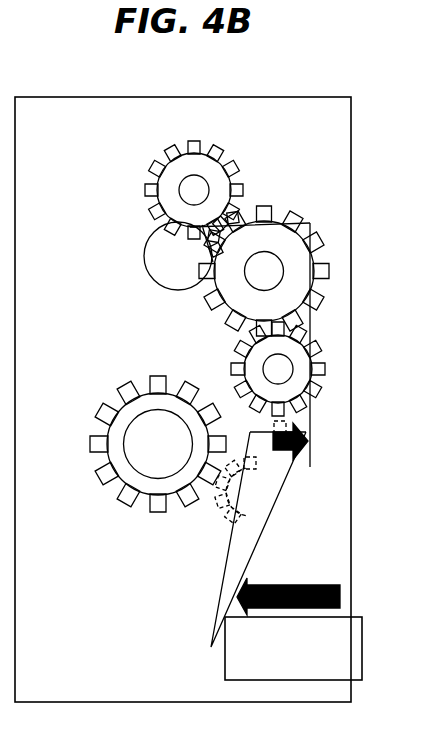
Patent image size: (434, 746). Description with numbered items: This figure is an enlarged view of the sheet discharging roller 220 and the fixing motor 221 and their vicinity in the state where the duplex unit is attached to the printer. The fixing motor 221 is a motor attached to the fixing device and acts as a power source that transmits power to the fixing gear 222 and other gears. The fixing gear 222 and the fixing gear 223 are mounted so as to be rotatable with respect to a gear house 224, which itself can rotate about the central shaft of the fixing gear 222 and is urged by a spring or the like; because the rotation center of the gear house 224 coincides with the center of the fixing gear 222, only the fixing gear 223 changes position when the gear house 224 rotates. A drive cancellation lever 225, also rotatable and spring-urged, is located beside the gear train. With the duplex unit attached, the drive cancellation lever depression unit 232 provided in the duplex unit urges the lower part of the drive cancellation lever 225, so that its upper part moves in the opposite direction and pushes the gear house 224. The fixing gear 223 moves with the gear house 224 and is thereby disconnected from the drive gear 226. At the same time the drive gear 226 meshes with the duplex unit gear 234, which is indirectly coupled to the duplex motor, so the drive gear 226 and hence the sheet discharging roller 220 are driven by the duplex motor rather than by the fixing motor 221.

The sheet discharging roller 220 is at (142, 445).
The fixing motor 221 is at (150, 257).
The fixing gear 222 is at (275, 232).
The fixing gear 223 is at (265, 363).
The gear house 224 is at (312, 452).
The drive cancellation lever 225 is at (230, 569).
The drive gear 226 is at (133, 395).
The drive cancellation lever depression unit 232 is at (225, 667).
The duplex unit gear 234 is at (222, 528).